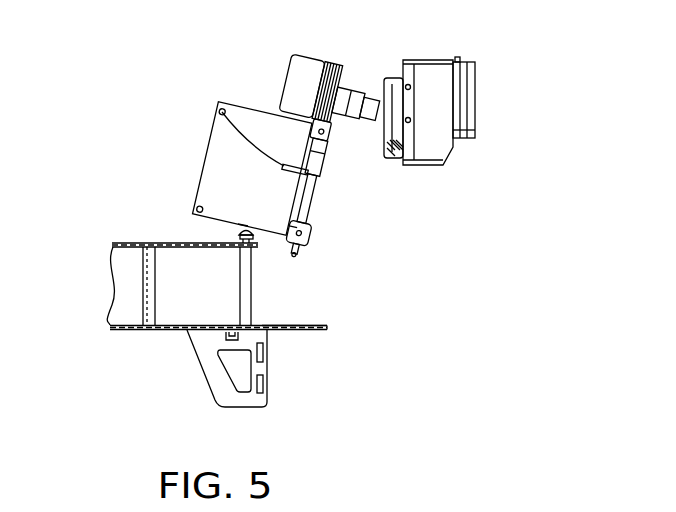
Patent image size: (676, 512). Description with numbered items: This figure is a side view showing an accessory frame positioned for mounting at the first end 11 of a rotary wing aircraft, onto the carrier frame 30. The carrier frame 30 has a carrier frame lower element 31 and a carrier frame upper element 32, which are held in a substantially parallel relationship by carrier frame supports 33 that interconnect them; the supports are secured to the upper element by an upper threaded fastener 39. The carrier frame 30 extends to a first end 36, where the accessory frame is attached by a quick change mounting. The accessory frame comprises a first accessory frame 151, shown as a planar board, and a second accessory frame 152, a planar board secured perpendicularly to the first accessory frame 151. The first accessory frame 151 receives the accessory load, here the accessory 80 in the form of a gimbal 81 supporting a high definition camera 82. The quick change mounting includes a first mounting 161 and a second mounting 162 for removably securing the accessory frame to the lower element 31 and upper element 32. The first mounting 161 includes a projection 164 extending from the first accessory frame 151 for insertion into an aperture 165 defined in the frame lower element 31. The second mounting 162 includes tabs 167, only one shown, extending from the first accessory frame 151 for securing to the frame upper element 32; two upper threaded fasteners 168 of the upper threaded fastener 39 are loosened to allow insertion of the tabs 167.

The first end 11 is at (278, 328).
The carrier frame 30 is at (120, 241).
The carrier frame lower element 31 is at (113, 327).
The carrier frame upper element 32 is at (137, 243).
The carrier frame supports 33 is at (143, 293).
The first end 36 is at (327, 333).
The upper threaded fastener 39 is at (243, 241).
The accessory 80 is at (500, 248).
The gimbal 81 is at (313, 58).
The high definition camera 82 is at (477, 107).
The first accessory frame 151 is at (323, 177).
The second accessory frame 152 is at (213, 130).
The first mounting 161 is at (299, 247).
The second mounting 162 is at (220, 108).
The projection 164 is at (300, 256).
The aperture 165 is at (293, 335).
The tabs 167 is at (287, 165).
The upper threaded fasteners 168 is at (243, 225).